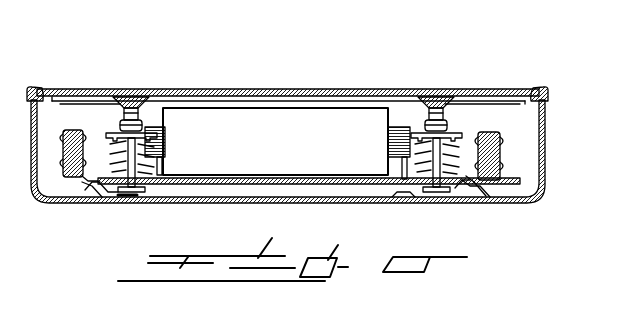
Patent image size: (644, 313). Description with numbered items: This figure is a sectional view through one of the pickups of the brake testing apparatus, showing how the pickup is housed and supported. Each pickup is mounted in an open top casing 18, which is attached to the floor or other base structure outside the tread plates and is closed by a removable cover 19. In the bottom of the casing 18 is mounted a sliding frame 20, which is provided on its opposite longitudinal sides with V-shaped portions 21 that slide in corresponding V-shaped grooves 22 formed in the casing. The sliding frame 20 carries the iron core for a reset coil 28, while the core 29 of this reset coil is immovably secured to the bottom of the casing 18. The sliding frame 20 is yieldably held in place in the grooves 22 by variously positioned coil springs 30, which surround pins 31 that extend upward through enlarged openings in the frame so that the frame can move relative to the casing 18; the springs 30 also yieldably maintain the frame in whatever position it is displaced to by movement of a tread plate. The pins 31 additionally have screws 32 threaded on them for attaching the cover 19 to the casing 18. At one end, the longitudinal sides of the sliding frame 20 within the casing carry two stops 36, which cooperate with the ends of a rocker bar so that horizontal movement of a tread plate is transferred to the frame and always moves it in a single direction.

The pickup casing 18 is at (538, 176).
The cover 19 is at (498, 98).
The sliding frame 20 is at (352, 186).
The V-shaped portions 21 is at (463, 200).
The V-shaped grooves 22 is at (470, 203).
The reset coil 28 is at (282, 135).
The reset coil core 29 is at (155, 130).
The coil springs 30 is at (168, 147).
The pins 31 is at (134, 167).
The screws 32 is at (133, 105).
The stops 36 is at (77, 130).